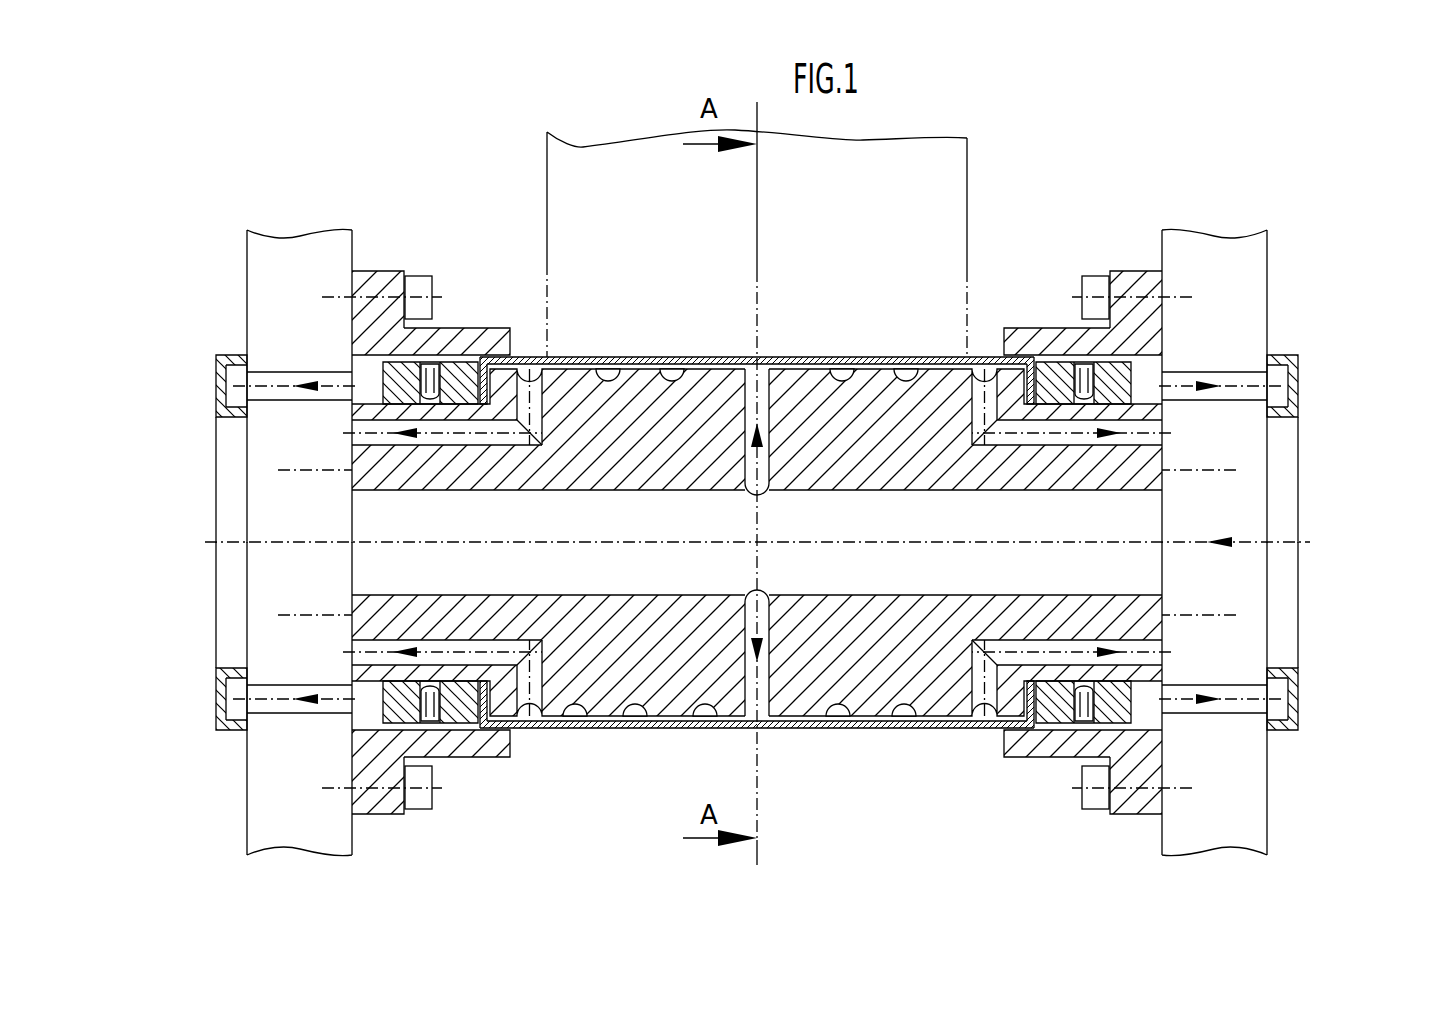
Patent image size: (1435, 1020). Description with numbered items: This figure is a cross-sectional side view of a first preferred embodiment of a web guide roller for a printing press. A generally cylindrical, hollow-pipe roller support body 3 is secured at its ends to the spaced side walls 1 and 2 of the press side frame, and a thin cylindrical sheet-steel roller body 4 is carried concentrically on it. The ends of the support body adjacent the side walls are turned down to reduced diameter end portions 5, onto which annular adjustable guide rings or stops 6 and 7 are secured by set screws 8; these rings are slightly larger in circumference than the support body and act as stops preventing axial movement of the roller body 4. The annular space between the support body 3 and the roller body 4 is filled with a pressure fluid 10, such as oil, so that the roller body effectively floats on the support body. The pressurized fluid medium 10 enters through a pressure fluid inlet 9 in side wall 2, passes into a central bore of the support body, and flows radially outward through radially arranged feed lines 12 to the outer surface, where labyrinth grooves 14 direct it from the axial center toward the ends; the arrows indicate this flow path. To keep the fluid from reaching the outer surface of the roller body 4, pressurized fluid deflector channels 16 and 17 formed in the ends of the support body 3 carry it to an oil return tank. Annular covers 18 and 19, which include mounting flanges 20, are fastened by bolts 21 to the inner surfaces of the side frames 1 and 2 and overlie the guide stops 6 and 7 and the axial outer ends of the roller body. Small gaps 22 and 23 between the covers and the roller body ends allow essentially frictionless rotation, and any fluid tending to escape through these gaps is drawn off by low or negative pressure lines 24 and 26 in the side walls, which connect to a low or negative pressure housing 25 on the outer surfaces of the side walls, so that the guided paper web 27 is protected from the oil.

The side wall 1 is at (324, 267).
The side wall 2 is at (1190, 260).
The roller support body 3 is at (850, 660).
The roller body 4 is at (591, 362).
The reduced diameter end portions 5 is at (406, 722).
The guide ring 6 is at (457, 380).
The guide ring 7 is at (1049, 380).
The set screws 8 is at (438, 712).
The pressure fluid inlet 9 is at (1243, 551).
The pressure fluid 10 is at (727, 367).
The feed lines 12 is at (750, 360).
The labyrinth grooves 14 is at (667, 357).
The pressurized fluid deflector channel 16 is at (366, 438).
The pressurized fluid deflector channel 17 is at (1145, 438).
The annular cover 18 is at (495, 739).
The annular cover 19 is at (1005, 742).
The mounting flanges 20 is at (387, 795).
The bolts 21 is at (418, 290).
The gap 22 is at (511, 356).
The gap 23 is at (1003, 330).
The low pressure line 24 is at (274, 388).
The low pressure housing 25 is at (232, 513).
The low pressure line 26 is at (1240, 387).
The paper web 27 is at (938, 305).